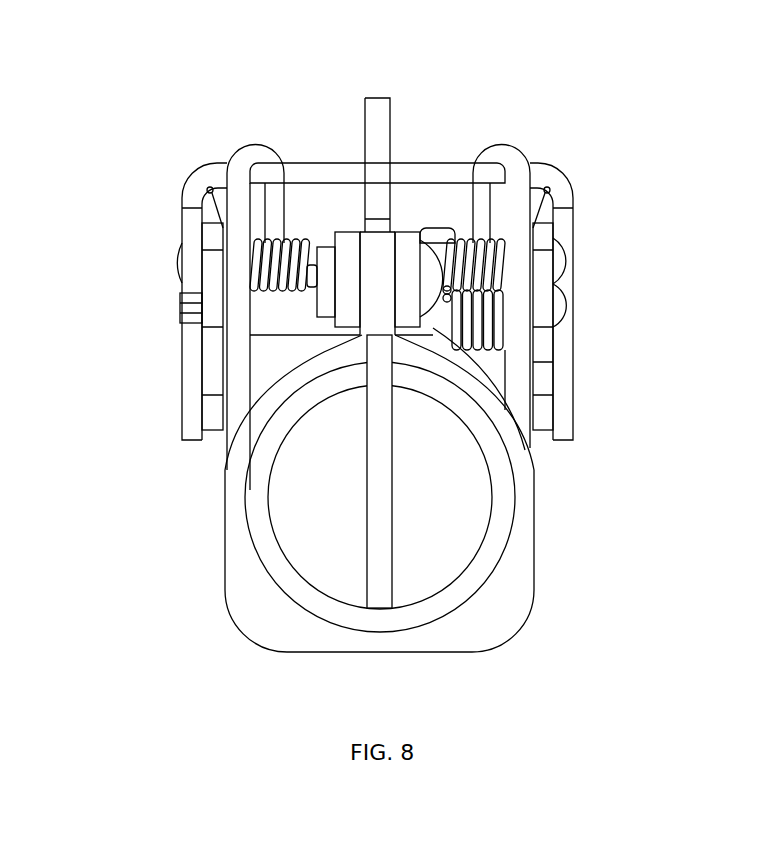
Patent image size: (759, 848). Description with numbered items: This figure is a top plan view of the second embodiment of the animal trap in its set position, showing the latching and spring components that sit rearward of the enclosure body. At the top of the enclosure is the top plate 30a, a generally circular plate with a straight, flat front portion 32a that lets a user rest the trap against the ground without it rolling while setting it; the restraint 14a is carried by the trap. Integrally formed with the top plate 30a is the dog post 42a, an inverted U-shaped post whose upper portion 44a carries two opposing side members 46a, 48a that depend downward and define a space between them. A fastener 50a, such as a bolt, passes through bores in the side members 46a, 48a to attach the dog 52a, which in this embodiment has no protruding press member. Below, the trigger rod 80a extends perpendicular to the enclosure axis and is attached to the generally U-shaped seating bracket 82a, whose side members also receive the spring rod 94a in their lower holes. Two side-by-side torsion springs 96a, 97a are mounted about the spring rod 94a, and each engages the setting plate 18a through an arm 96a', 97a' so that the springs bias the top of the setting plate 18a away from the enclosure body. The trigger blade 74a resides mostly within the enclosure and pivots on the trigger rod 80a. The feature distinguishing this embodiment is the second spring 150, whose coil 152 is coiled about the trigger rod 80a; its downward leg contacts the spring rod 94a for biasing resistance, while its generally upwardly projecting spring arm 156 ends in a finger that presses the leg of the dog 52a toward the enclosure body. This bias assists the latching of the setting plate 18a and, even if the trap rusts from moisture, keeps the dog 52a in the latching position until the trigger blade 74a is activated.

The restraint 14a is at (517, 170).
The setting plate 18a is at (453, 170).
The top plate 30a is at (507, 597).
The flat front portion 32a is at (425, 656).
The dog post 42a is at (370, 257).
The upper portion 44a is at (478, 308).
The side member 46a is at (433, 286).
The side member 48a is at (347, 277).
The fastener 50a is at (563, 252).
The dog 52a is at (381, 94).
The trigger blade 74a is at (381, 502).
The trigger rod 80a is at (492, 372).
The seating bracket 82a is at (213, 357).
The spring rod 94a is at (226, 254).
The torsion spring 96a is at (555, 249).
The arm 96a' is at (584, 219).
The torsion spring 97a is at (146, 332).
The arm 97a' is at (192, 209).
The second spring 150 is at (486, 330).
The coil 152 is at (497, 343).
The spring arm 156 is at (430, 233).